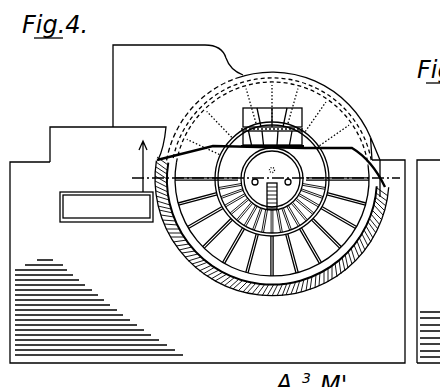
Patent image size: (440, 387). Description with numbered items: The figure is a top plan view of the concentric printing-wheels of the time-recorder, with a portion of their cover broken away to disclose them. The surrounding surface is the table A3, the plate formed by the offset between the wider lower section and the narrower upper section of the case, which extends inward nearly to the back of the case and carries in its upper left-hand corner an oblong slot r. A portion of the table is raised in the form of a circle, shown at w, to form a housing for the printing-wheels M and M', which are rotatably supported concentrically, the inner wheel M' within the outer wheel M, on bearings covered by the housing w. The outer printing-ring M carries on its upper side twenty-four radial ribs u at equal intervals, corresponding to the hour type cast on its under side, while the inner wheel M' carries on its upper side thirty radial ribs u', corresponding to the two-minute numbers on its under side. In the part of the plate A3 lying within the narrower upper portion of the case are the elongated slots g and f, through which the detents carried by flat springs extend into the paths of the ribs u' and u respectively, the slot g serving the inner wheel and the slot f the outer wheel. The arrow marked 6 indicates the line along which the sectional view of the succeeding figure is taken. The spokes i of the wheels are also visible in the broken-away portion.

The table A3 is at (207, 245).
The elongated slot g is at (301, 130).
The elongated slot f is at (296, 122).
The ribs u' is at (271, 133).
The housing w is at (369, 133).
The ribs u is at (259, 226).
The printing-wheel M' is at (252, 228).
The spokes i is at (233, 255).
The printing-wheel M is at (272, 230).
The oblong slot r is at (106, 207).
The section line 6 is at (134, 166).